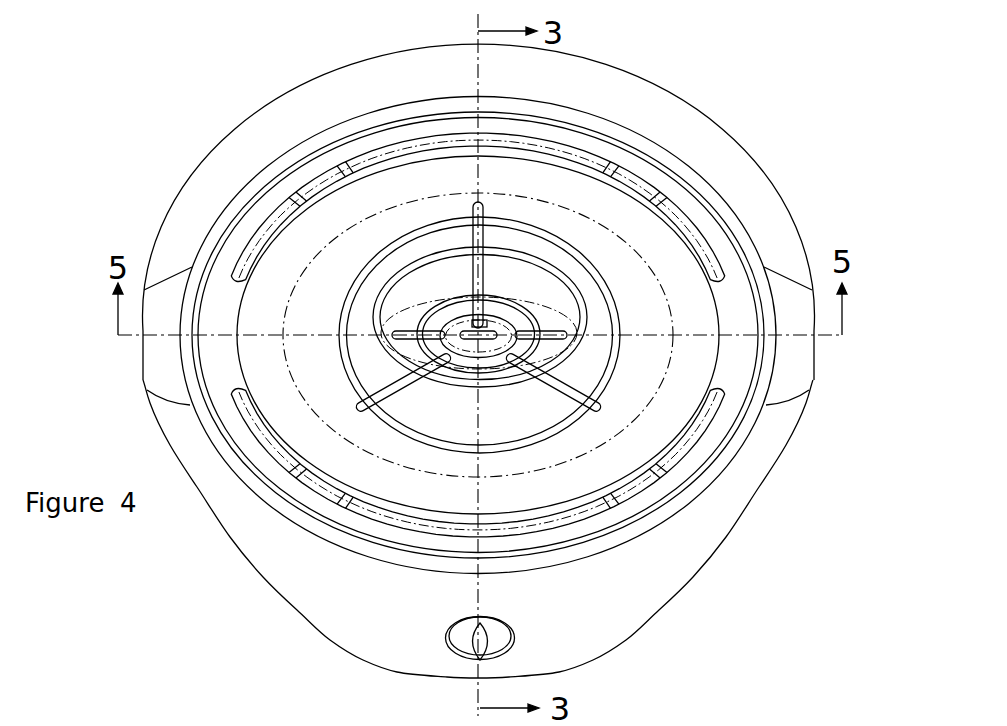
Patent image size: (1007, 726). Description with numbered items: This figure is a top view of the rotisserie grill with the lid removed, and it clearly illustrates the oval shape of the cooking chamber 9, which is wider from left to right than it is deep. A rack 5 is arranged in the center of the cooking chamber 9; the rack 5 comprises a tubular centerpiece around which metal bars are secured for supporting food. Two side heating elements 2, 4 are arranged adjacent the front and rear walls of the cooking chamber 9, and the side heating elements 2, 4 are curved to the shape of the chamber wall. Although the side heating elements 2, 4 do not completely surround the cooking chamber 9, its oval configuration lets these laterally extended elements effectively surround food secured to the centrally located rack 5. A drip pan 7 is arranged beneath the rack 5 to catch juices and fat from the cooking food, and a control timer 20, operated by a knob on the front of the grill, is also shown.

The side heating element 2 is at (644, 490).
The side heating element 4 is at (322, 183).
The rack 5 is at (607, 368).
The drip pan 7 is at (260, 305).
The cooking chamber 9 is at (670, 256).
The control timer 20 is at (498, 637).